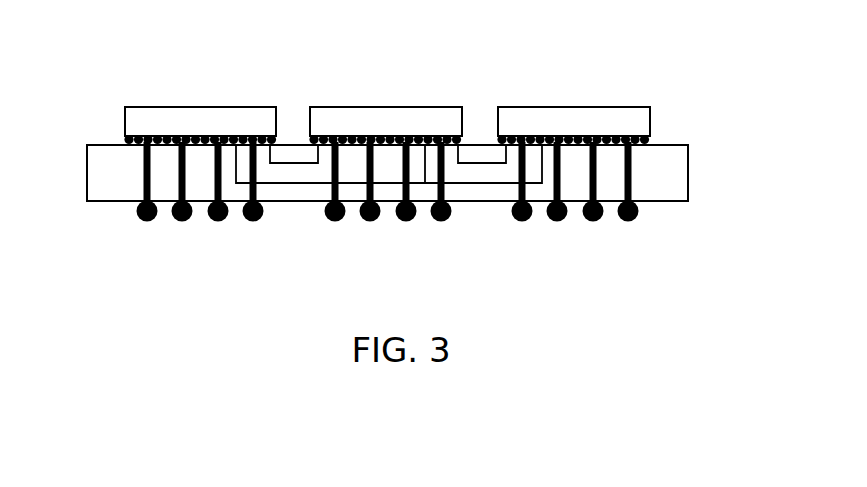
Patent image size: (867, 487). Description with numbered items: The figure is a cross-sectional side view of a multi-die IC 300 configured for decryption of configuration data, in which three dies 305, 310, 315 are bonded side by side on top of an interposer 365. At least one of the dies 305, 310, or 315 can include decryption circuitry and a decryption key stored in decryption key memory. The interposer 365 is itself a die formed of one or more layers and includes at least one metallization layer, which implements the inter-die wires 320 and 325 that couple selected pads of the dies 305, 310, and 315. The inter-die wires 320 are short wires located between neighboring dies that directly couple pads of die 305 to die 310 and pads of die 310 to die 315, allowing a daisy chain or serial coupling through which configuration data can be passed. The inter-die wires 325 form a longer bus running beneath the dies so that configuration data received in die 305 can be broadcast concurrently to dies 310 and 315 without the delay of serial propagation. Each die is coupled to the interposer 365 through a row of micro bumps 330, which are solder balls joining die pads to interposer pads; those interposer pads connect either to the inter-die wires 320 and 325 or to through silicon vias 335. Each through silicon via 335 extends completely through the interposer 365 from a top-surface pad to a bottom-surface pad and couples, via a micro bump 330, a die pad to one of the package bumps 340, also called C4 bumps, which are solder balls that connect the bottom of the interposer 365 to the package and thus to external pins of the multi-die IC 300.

The multi-die IC 300 is at (418, 32).
The die 305 is at (200, 121).
The die 310 is at (386, 121).
The die 315 is at (574, 121).
The inter-die wires 320 is at (292, 162).
The inter-die wires 325 is at (278, 185).
The micro bumps 330 is at (123, 139).
The through silicon vias 335 is at (144, 183).
The package bumps 340 is at (594, 221).
The interposer 365 is at (689, 172).